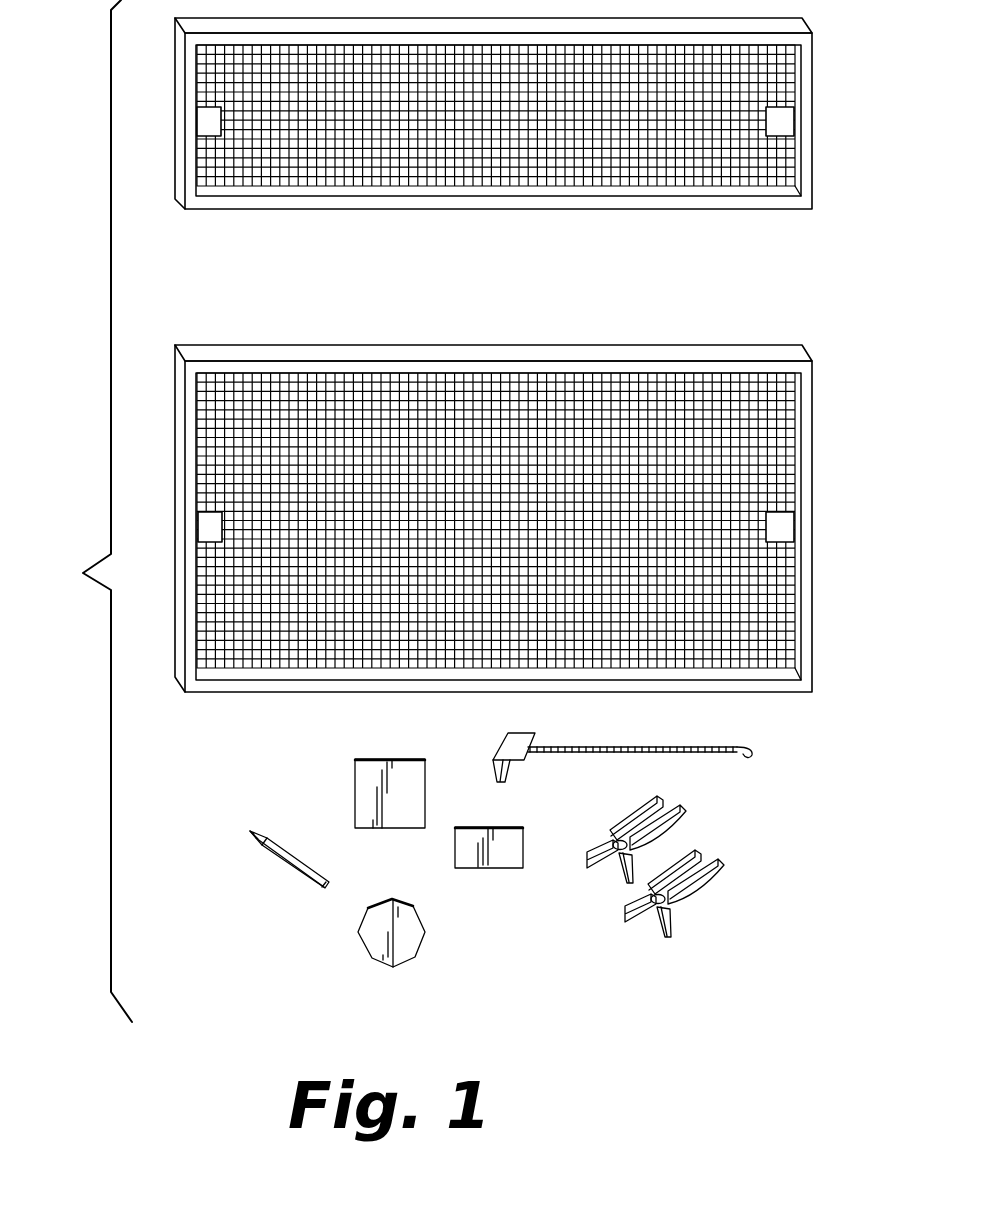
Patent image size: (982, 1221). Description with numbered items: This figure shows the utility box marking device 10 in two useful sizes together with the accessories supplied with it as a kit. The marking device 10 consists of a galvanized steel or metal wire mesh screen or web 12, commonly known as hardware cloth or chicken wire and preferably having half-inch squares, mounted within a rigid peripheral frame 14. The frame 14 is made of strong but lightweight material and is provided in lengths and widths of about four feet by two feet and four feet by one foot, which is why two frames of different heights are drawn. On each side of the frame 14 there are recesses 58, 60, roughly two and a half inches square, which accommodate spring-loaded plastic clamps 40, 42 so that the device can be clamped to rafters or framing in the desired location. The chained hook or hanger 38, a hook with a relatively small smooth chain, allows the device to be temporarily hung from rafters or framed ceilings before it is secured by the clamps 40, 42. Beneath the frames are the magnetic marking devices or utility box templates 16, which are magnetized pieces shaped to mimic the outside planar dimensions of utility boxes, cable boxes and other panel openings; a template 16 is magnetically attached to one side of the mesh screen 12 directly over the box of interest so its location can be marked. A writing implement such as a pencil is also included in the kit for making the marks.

The utility box marking device 10 is at (88, 166).
The wire mesh screen or web 12 is at (502, 443).
The rigid peripheral frame 14 is at (592, 368).
The magnetic marking device or utility box template 16 is at (454, 848).
The chained hook or hanger 38 is at (623, 748).
The clamp 40 is at (680, 818).
The clamp 42 is at (705, 888).
The recess for clamp 58 is at (208, 526).
The recess for clamp 60 is at (790, 528).